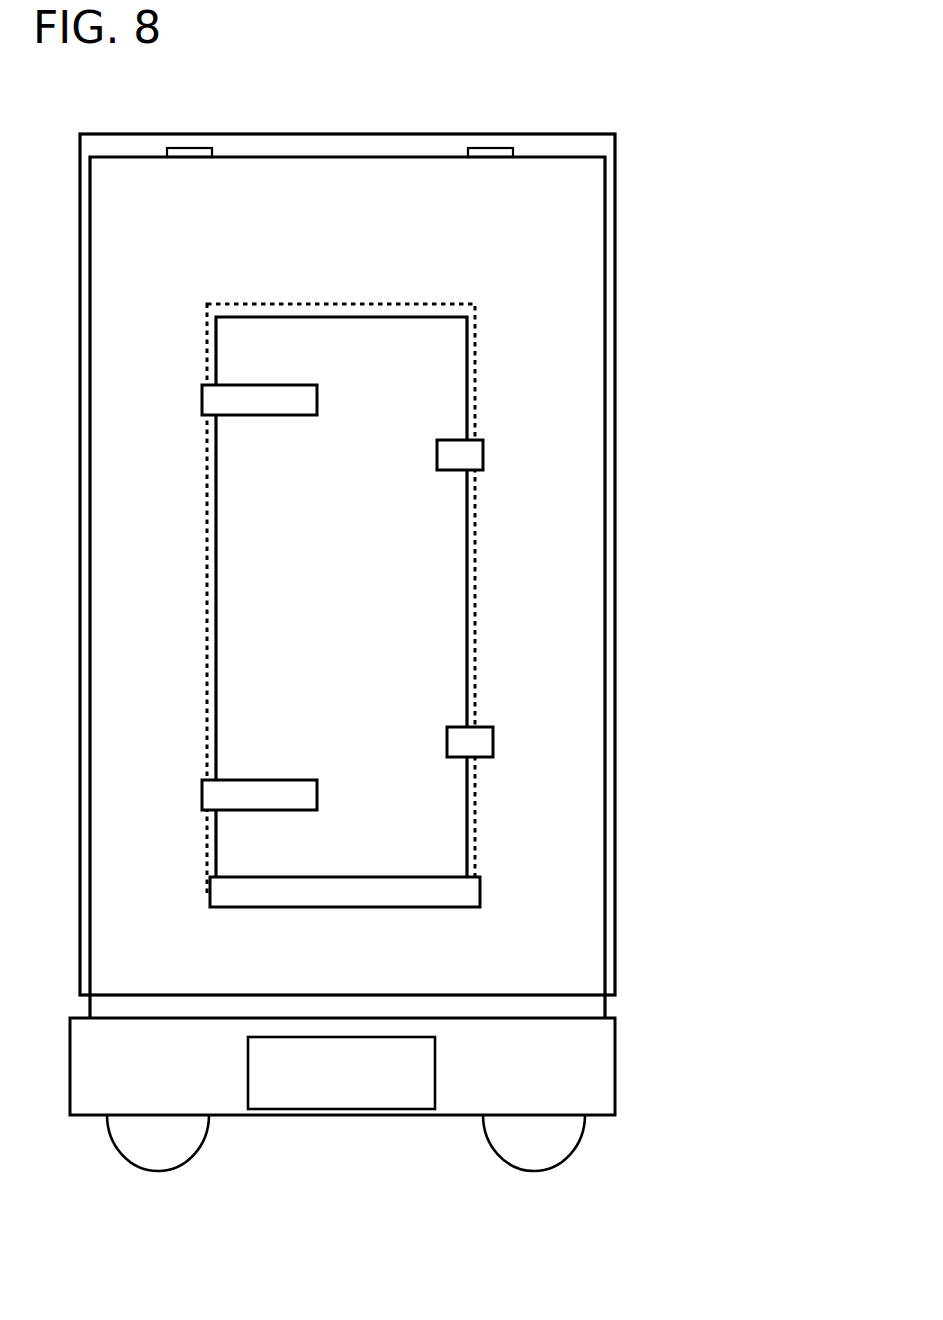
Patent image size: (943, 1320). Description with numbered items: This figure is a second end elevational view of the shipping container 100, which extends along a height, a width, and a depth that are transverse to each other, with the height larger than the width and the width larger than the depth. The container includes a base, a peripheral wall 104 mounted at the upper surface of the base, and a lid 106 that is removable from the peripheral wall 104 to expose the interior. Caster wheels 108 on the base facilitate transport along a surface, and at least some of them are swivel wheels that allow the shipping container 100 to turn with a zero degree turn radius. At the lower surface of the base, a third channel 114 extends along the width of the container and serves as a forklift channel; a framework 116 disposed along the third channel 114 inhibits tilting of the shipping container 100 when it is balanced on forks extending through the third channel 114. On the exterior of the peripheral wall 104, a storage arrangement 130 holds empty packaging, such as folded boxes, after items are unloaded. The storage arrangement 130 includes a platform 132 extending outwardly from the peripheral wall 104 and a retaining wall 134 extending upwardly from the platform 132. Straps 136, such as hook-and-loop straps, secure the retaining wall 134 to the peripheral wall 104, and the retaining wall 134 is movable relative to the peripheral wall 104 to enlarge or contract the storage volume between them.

The shipping container 100 is at (633, 212).
The peripheral wall 104 is at (607, 455).
The lid 106 is at (588, 132).
The caster wheels 108 is at (577, 1152).
The third channel 114 is at (248, 1077).
The framework 116 is at (362, 1117).
The storage arrangement 130 is at (438, 302).
The platform 132 is at (420, 892).
The retaining wall 134 is at (323, 578).
The straps 136 is at (268, 779).